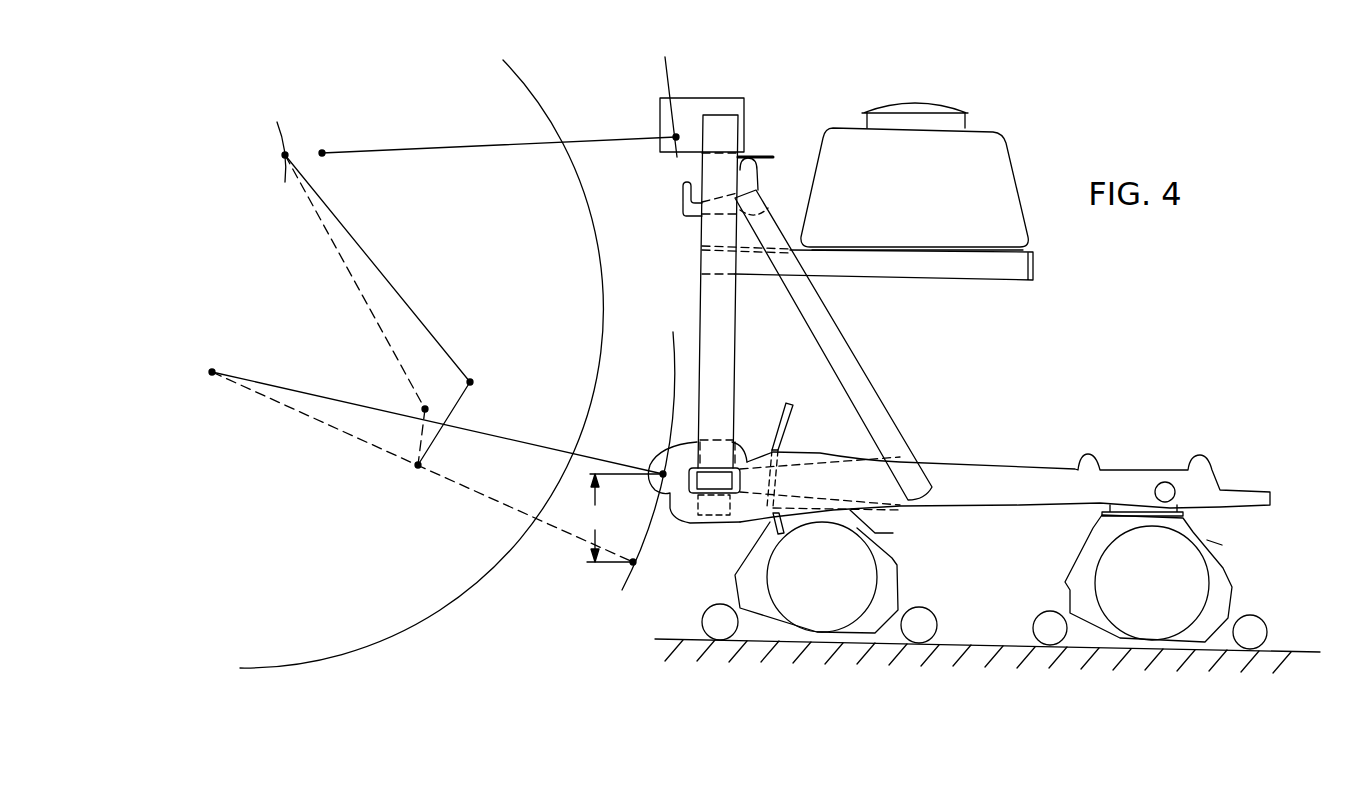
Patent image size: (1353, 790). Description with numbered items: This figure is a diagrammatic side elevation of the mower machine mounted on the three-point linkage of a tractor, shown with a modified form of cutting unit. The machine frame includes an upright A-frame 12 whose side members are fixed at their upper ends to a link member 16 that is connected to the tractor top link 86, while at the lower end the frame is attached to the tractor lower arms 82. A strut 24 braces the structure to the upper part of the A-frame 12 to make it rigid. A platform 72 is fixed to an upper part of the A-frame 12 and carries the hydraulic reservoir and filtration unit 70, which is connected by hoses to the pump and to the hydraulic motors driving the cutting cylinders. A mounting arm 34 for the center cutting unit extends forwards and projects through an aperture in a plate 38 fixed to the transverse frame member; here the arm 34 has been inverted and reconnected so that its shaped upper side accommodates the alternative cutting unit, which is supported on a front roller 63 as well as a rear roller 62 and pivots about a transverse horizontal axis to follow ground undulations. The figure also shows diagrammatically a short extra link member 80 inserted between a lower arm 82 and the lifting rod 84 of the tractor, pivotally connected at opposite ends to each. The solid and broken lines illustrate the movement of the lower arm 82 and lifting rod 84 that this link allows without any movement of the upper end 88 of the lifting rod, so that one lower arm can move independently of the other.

The A-frame 12 is at (700, 296).
The link member 16 is at (660, 115).
The strut 24 is at (862, 378).
The mounting arm 34 is at (998, 473).
The plate 38 is at (787, 402).
The rear roller 62 is at (917, 617).
The front roller 63 is at (717, 613).
The hydraulic reservoir and filtration unit 70 is at (903, 198).
The platform 72 is at (1005, 272).
The link member 80 is at (465, 392).
The lower arm 82 is at (513, 440).
The lifting rod 84 is at (398, 290).
The tractor top link 86 is at (457, 146).
The upper end of the lifting rod 88 is at (285, 160).